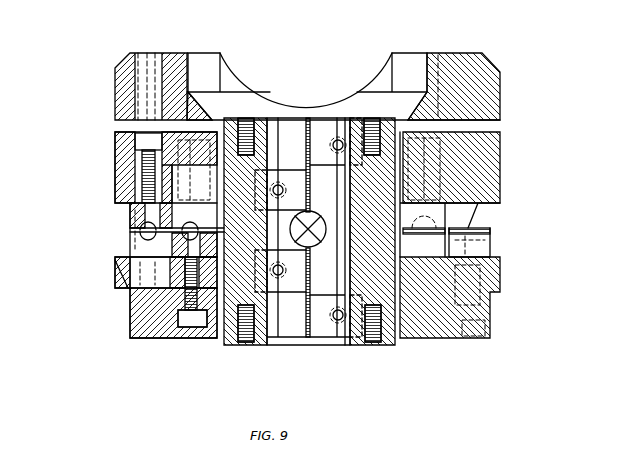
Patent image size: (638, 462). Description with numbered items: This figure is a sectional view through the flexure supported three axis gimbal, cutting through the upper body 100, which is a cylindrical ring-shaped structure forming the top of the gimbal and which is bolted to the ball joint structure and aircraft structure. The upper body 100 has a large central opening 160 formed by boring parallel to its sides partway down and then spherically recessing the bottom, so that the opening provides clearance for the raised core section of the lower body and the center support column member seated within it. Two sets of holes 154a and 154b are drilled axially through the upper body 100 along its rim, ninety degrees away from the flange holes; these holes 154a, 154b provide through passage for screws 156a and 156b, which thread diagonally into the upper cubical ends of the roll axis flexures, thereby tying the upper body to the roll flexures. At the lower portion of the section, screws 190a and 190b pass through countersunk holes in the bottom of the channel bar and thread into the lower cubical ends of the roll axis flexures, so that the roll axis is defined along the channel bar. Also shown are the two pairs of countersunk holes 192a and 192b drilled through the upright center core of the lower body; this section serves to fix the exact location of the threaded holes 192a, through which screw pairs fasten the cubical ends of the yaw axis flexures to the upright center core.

The upper body 100 is at (502, 94).
The central opening 160 is at (390, 72).
The hole 154a is at (187, 56).
The hole 154b is at (428, 53).
The screw 156a is at (200, 130).
The screw 156b is at (428, 130).
The screw 190a is at (145, 339).
The screw 190b is at (472, 339).
The countersunk holes 192a is at (279, 185).
The countersunk holes 192b is at (338, 321).